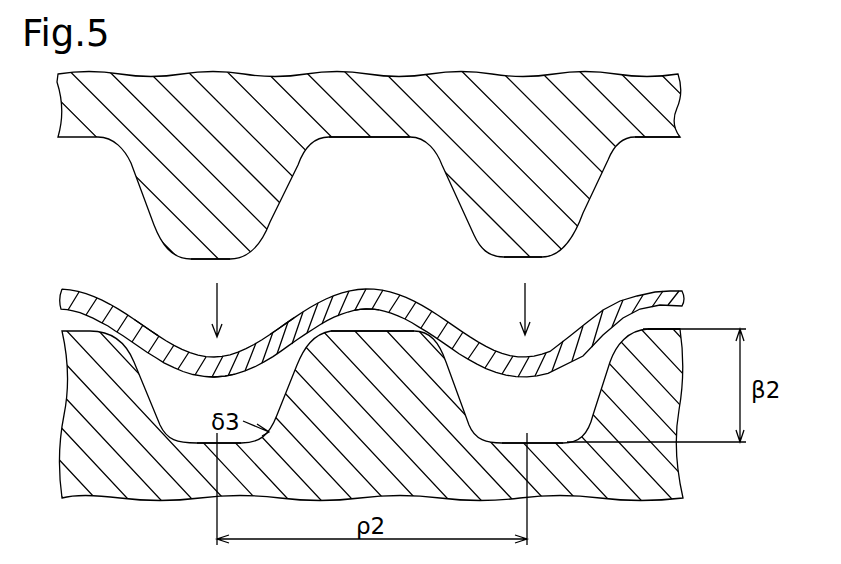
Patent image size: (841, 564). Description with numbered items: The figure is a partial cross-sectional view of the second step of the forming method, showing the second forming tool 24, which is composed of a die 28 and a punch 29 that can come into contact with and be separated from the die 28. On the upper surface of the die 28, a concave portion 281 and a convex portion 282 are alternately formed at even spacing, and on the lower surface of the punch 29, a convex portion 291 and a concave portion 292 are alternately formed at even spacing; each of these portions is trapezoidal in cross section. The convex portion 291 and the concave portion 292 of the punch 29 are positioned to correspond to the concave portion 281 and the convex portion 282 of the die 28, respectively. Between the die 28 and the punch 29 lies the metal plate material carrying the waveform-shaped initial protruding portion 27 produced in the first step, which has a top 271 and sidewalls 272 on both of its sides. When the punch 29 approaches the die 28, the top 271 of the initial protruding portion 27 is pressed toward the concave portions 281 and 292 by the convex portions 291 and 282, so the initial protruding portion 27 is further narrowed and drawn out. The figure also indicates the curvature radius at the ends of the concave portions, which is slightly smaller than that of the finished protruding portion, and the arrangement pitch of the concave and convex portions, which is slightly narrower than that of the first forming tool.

The second forming tool 24 is at (420, 179).
The punch 29 is at (420, 179).
The convex portion 291 is at (233, 256).
The concave portion 292 is at (392, 135).
The initial protruding portion 27 is at (371, 338).
The top 271 is at (218, 378).
The sidewalls 272 is at (153, 309).
The die 28 is at (420, 386).
The concave portion 281 is at (230, 436).
The convex portion 282 is at (378, 330).